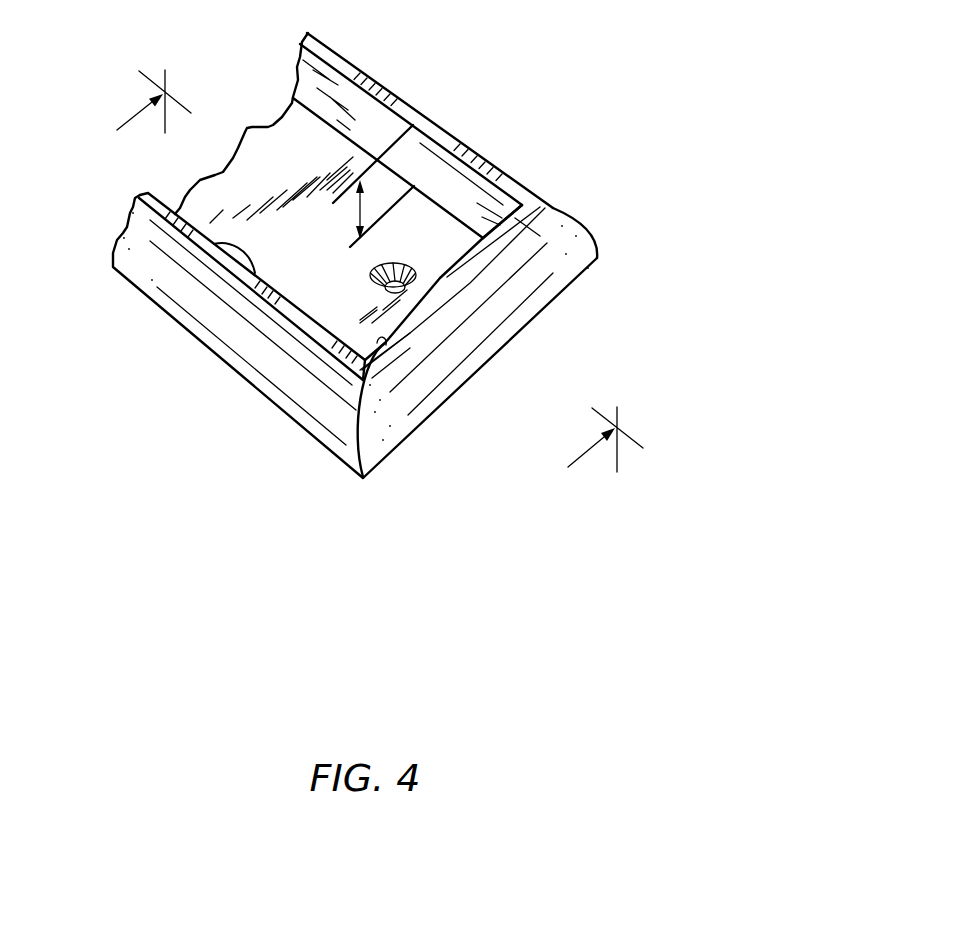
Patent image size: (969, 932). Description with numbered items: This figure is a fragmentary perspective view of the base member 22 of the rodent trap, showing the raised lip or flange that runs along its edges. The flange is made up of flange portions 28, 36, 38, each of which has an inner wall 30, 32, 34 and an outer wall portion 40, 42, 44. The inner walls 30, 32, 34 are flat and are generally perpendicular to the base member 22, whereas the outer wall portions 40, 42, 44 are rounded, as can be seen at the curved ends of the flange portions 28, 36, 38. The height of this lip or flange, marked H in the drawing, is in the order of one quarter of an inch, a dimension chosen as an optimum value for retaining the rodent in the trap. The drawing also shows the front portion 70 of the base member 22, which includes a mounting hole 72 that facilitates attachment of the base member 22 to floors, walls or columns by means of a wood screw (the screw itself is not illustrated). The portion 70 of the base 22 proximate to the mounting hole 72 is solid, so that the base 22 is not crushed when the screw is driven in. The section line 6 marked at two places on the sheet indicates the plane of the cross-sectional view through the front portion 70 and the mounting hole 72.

The base member 22 is at (300, 143).
The flange portion 28 is at (527, 287).
The inner wall 30 is at (450, 170).
The inner wall 32 is at (386, 345).
The inner wall 34 is at (214, 244).
The flange portion 36 is at (508, 182).
The flange portion 38 is at (304, 368).
The outer wall portion 40 is at (556, 212).
The outer wall portion 42 is at (493, 332).
The outer wall portion 44 is at (345, 440).
The front portion 70 is at (342, 295).
The mounting hole 72 is at (415, 264).
The section line 6- 6 is at (369, 279).